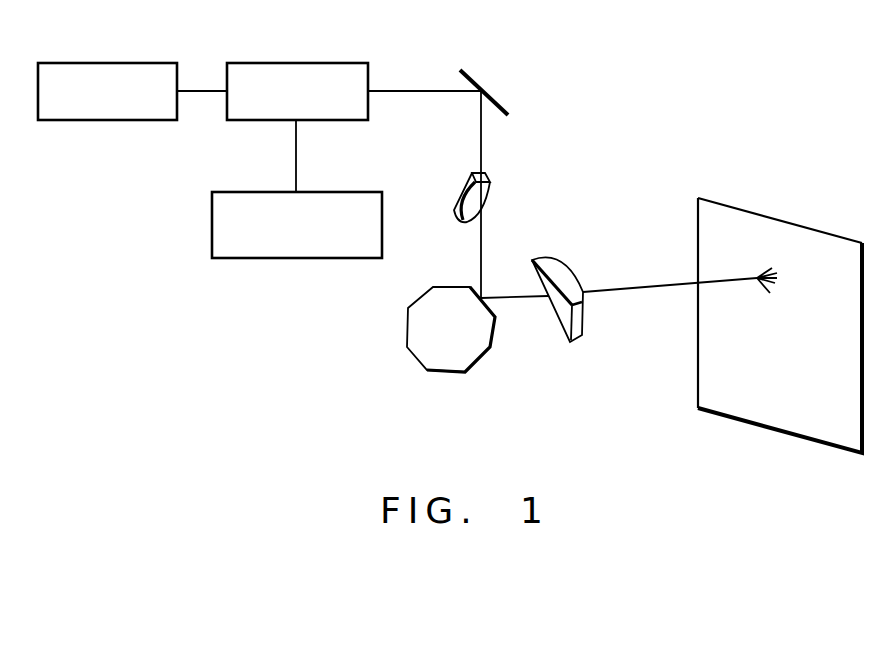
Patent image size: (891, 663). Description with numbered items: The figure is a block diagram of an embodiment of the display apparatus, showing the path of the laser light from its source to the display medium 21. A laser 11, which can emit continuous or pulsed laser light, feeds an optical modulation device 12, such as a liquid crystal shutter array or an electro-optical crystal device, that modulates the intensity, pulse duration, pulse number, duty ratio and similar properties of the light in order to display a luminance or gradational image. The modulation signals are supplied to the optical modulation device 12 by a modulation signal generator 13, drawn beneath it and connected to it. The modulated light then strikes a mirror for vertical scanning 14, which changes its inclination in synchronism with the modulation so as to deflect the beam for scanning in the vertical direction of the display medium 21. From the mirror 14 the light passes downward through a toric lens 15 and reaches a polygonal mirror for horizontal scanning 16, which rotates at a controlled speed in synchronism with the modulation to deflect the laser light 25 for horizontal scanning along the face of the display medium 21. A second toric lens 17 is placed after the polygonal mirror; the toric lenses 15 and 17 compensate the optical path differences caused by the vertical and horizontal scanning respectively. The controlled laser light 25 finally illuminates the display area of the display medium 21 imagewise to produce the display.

The laser 11 is at (108, 63).
The optical modulation device 12 is at (310, 63).
The modulation signal generator 13 is at (313, 258).
The mirror for vertical scanning 14 is at (497, 100).
The toric lens 15 is at (496, 197).
The polygonal mirror for horizontal scanning 16 is at (445, 372).
The toric lens 17 is at (560, 336).
The display medium 21 is at (799, 222).
The laser light 25 is at (633, 288).